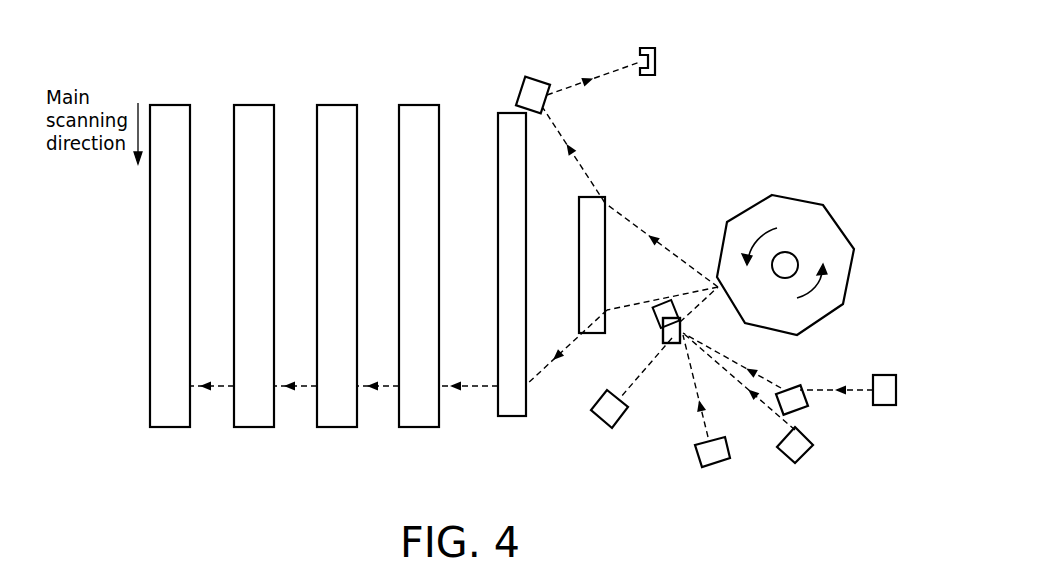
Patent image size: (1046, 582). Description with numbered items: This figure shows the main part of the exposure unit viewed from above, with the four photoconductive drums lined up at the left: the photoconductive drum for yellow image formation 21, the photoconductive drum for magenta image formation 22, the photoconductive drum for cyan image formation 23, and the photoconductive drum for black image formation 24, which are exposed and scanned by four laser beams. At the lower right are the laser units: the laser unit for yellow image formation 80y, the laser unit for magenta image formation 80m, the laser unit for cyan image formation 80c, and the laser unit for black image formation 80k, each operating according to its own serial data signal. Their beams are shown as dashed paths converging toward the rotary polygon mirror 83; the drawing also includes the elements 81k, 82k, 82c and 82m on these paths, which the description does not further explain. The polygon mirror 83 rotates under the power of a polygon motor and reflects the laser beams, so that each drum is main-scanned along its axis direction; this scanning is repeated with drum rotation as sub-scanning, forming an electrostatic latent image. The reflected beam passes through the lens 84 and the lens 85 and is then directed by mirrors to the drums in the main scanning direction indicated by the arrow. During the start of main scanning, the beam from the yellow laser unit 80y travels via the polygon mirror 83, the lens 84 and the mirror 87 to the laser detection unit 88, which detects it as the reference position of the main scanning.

The photoconductive drum for yellow image formation 21 is at (171, 105).
The photoconductive drum for magenta image formation 22 is at (254, 105).
The photoconductive drum for cyan image formation 23 is at (337, 105).
The photoconductive drum for black image formation 24 is at (419, 105).
The laser unit for yellow image formation 80y is at (601, 429).
The laser unit for magenta image formation 80m is at (716, 465).
The laser unit for cyan image formation 80c is at (786, 463).
The laser unit for black image formation 80k is at (883, 375).
The reflecting mirror for black beam 81k is at (809, 401).
The half mirror for black beam 82k is at (659, 315).
The half mirror for cyan beam 82c is at (665, 331).
The half mirror for magenta beam 82m is at (671, 344).
The rotary polygon mirror 83 is at (789, 196).
The lens 84 is at (579, 208).
The lens 85 is at (512, 417).
The mirror 87 is at (535, 77).
The laser detection unit 88 is at (646, 47).